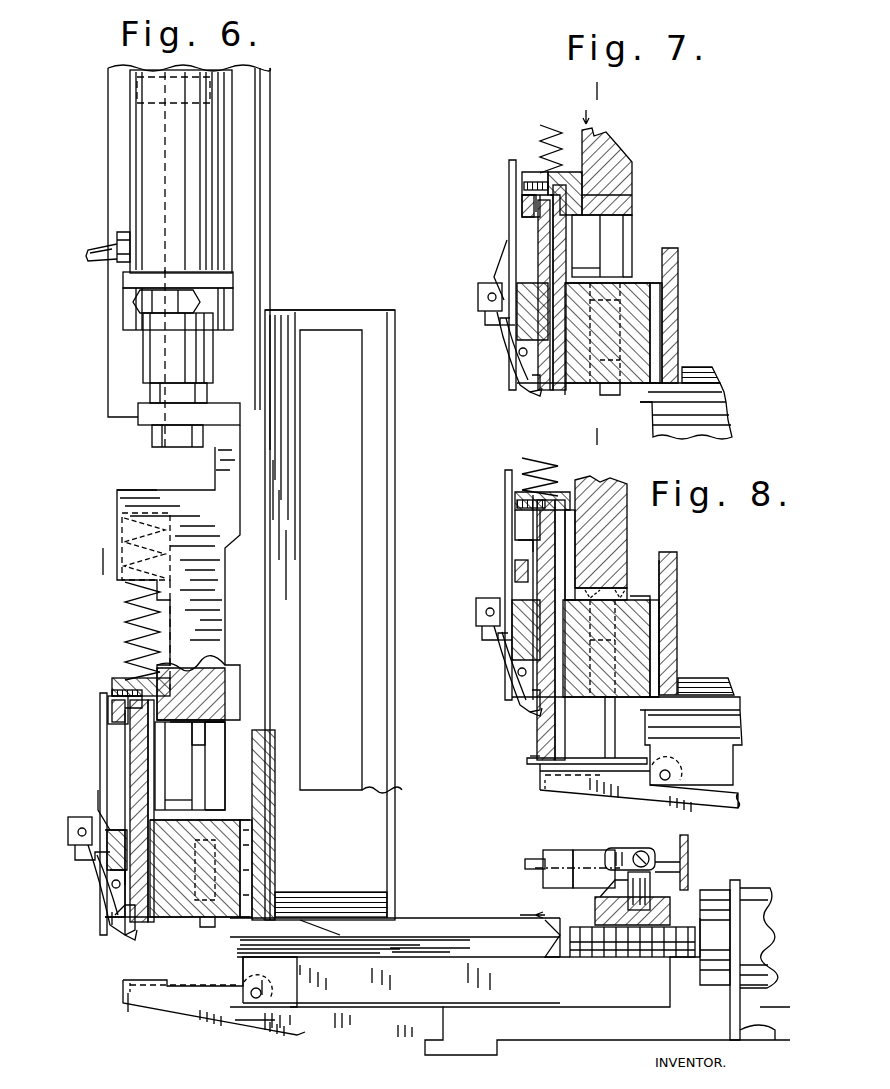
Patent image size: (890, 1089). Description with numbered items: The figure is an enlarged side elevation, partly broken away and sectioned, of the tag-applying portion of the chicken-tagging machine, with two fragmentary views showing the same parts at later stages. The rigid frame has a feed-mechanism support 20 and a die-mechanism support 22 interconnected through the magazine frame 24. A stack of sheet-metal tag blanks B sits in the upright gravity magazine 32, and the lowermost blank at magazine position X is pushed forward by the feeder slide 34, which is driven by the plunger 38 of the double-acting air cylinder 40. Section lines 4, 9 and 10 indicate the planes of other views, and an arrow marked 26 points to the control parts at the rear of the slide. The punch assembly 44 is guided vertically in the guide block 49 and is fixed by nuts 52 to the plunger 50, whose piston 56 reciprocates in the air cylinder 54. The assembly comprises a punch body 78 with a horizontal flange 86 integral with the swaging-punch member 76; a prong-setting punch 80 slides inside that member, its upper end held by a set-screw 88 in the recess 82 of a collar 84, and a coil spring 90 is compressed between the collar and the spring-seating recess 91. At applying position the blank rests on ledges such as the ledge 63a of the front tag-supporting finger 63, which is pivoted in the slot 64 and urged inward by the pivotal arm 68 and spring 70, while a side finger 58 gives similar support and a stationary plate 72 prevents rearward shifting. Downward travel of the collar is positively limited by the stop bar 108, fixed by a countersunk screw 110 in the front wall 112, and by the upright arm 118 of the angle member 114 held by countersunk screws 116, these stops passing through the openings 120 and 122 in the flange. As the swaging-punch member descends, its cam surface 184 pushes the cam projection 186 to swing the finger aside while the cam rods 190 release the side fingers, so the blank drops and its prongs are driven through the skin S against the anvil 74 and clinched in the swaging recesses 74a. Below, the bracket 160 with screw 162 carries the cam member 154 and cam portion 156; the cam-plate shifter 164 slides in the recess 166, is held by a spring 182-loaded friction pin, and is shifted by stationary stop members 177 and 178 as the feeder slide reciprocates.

In FIG. 7, the section line 4 is at (565, 390).
In FIG. 7, the section line 9 is at (587, 94).
In FIG. 6, the section line 10 is at (93, 564).
In FIG. 6, the feed-mechanism support 20 is at (541, 1051).
In FIG. 6, the die-mechanism support 22 is at (291, 271).
In FIG. 7, the die-mechanism support 22 is at (660, 231).
In FIG. 8, the die-mechanism support 22 is at (678, 558).
In FIG. 6, the magazine frame 24 is at (412, 500).
In FIG. 6, the adjusting mechanism 26 is at (518, 872).
In FIG. 6, the magazine 32 is at (395, 575).
In FIG. 6, the feeder slide 34 is at (512, 937).
In FIG. 6, the plunger 38 is at (622, 962).
In FIG. 6, the double-acting air cylinder 40 is at (752, 888).
In FIG. 6, the punch assembly 44 is at (80, 637).
In FIG. 6, the guide block 49 is at (110, 868).
In FIG. 7, the guide block 49 is at (640, 298).
In FIG. 8, the guide block 49 is at (640, 620).
In FIG. 6, the plunger 50 is at (143, 355).
In FIG. 6, the nuts 52 is at (155, 432).
In FIG. 6, the double-acting air cylinder 54 is at (216, 198).
In FIG. 6, the piston 56 is at (132, 88).
In FIG. 7, the tag-supporting finger 58 is at (500, 345).
In FIG. 6, the tag-supporting finger 63 is at (110, 932).
In FIG. 7, the tag-supporting finger 63 is at (520, 388).
In FIG. 8, the tag-supporting finger 63 is at (525, 712).
In FIG. 6, the ledge 63a is at (127, 932).
In FIG. 7, the ledge 63a is at (535, 396).
In FIG. 8, the ledge 63a is at (532, 716).
In FIG. 6, the slot 64 is at (120, 878).
In FIG. 6, the pivotal arm 68 is at (115, 880).
In FIG. 8, the pivotal arm 68 is at (495, 670).
In FIG. 6, the spring 70 is at (70, 847).
In FIG. 7, the spring 70 is at (480, 313).
In FIG. 8, the spring 70 is at (478, 632).
In FIG. 6, the stationary plate 72 is at (246, 848).
In FIG. 7, the stationary plate 72 is at (656, 322).
In FIG. 8, the stationary plate 72 is at (655, 640).
In FIG. 6, the anvil 74 is at (165, 995).
In FIG. 8, the anvil 74 is at (585, 784).
In FIG. 6, the swaging recesses 74a is at (132, 1010).
In FIG. 8, the swaging recesses 74a is at (543, 786).
In FIG. 6, the swaging-punch member 76 is at (136, 756).
In FIG. 7, the swaging-punch member 76 is at (559, 287).
In FIG. 8, the swaging-punch member 76 is at (545, 732).
In FIG. 6, the punch body 78 is at (215, 590).
In FIG. 7, the punch body 78 is at (612, 160).
In FIG. 8, the punch body 78 is at (628, 522).
In FIG. 6, the prong-setting punch 80 is at (125, 784).
In FIG. 7, the prong-setting punch 80 is at (548, 218).
In FIG. 8, the prong-setting punch 80 is at (535, 576).
In FIG. 6, the recess 82 is at (108, 710).
In FIG. 7, the recess 82 is at (583, 182).
In FIG. 8, the recess 82 is at (540, 515).
In FIG. 6, the collar 84 is at (112, 682).
In FIG. 7, the collar 84 is at (525, 172).
In FIG. 8, the collar 84 is at (515, 497).
In FIG. 6, the flange 86 is at (112, 704).
In FIG. 7, the flange 86 is at (522, 200).
In FIG. 8, the flange 86 is at (515, 565).
In FIG. 6, the set-screw 88 is at (112, 692).
In FIG. 7, the set-screw 88 is at (524, 185).
In FIG. 8, the set-screw 88 is at (517, 504).
In FIG. 6, the coil spring 90 is at (125, 612).
In FIG. 7, the coil spring 90 is at (540, 125).
In FIG. 8, the coil spring 90 is at (538, 462).
In FIG. 6, the spring-seating recess 91 is at (122, 527).
In FIG. 6, the stop bar 108 is at (125, 768).
In FIG. 7, the stop bar 108 is at (536, 235).
In FIG. 8, the stop bar 108 is at (508, 585).
In FIG. 6, the countersunk screw 110 is at (98, 797).
In FIG. 7, the countersunk screw 110 is at (503, 260).
In FIG. 6, the front wall 112 is at (110, 850).
In FIG. 7, the front wall 112 is at (520, 330).
In FIG. 8, the front wall 112 is at (510, 650).
In FIG. 6, the angle member 114 is at (180, 787).
In FIG. 7, the angle member 114 is at (596, 270).
In FIG. 8, the angle member 114 is at (630, 575).
In FIG. 6, the countersunk screws 116 is at (212, 795).
In FIG. 8, the countersunk screws 116 is at (680, 570).
In FIG. 6, the upright arm 118 is at (165, 768).
In FIG. 7, the upright arm 118 is at (612, 236).
In FIG. 8, the upright arm 118 is at (630, 555).
In FIG. 6, the opening 120 is at (128, 724).
In FIG. 7, the opening 120 is at (522, 182).
In FIG. 8, the opening 120 is at (525, 552).
In FIG. 6, the opening 122 is at (166, 738).
In FIG. 7, the opening 122 is at (588, 195).
In FIG. 8, the opening 122 is at (628, 560).
In FIG. 6, the cam member 154 is at (550, 850).
In FIG. 6, the cam portion 156 is at (580, 843).
In FIG. 6, the bracket 160 is at (600, 897).
In FIG. 6, the screw 162 is at (672, 896).
In FIG. 6, the cam-plate shifter 164 is at (688, 840).
In FIG. 6, the recess 166 is at (548, 872).
In FIG. 6, the stop member 177 is at (690, 856).
In FIG. 6, the stop member 178 is at (390, 840).
In FIG. 6, the spring 182 is at (626, 852).
In FIG. 6, the cam surface 184 is at (118, 884).
In FIG. 8, the cam surface 184 is at (518, 764).
In FIG. 6, the cam projection 186 is at (125, 935).
In FIG. 8, the cam projection 186 is at (520, 680).
In FIG. 6, the cam rods 190 is at (205, 745).
In FIG. 6, the tag blank B is at (360, 892).
In FIG. 7, the tag blank B is at (703, 367).
In FIG. 8, the tag blank B is at (712, 678).
In FIG. 8, the skin S is at (515, 762).
In FIG. 6, the magazine position X is at (331, 926).